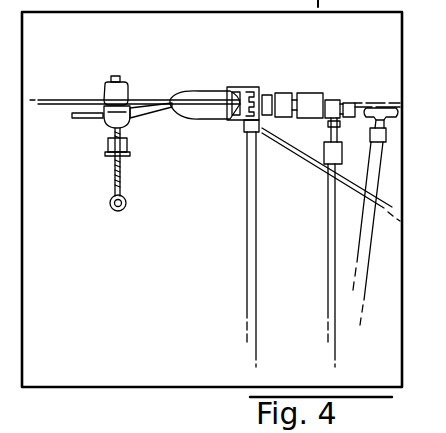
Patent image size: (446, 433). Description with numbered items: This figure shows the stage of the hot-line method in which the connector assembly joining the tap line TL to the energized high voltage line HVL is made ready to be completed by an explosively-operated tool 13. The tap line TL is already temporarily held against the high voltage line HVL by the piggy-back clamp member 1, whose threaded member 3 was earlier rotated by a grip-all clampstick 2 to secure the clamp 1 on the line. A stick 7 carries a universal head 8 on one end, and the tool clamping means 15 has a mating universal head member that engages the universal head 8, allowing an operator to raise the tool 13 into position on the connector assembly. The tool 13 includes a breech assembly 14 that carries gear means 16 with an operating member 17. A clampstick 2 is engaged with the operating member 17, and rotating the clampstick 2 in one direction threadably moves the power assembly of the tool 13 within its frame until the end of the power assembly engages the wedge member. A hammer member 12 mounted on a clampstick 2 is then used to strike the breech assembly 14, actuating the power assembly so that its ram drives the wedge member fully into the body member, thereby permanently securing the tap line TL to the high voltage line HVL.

The high voltage line HVL is at (45, 100).
The tap line TL is at (149, 122).
The piggy-back clamp member 1 is at (128, 80).
The grip-all clampstick 2 is at (327, 243).
The threaded member 3 is at (114, 181).
The stick 7 is at (246, 243).
The universal head 8 is at (262, 96).
The hammer member 12 is at (382, 102).
The explosively-operated tool 13 is at (198, 96).
The breech assembly 14 is at (316, 94).
The tool clamping means 15 is at (240, 87).
The gear means 16 is at (333, 100).
The operating member 17 is at (338, 128).